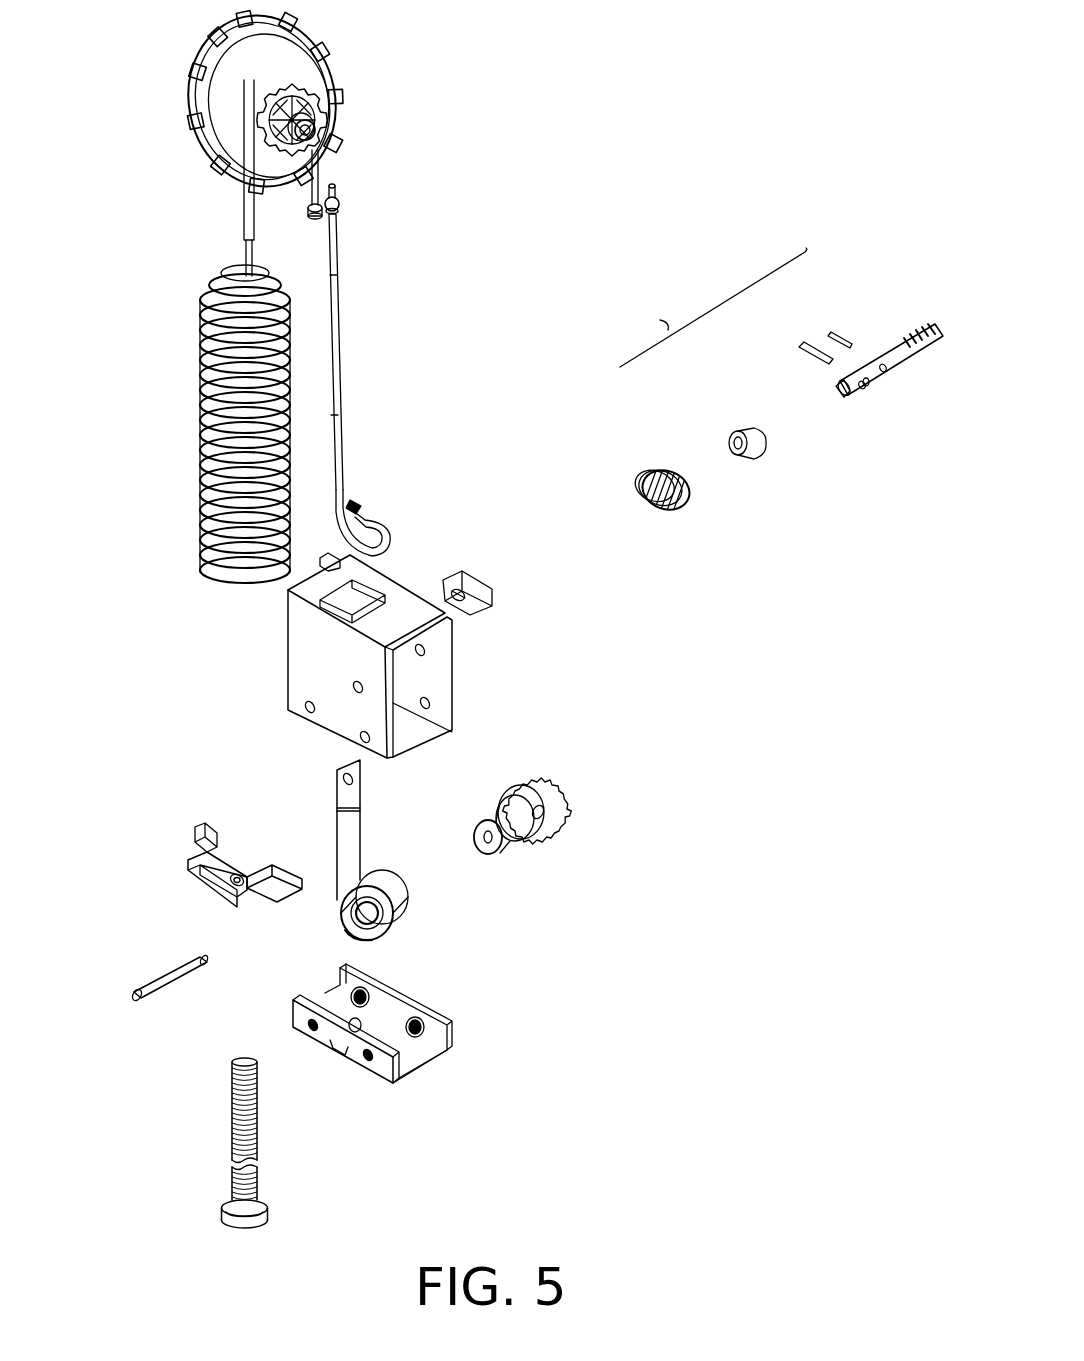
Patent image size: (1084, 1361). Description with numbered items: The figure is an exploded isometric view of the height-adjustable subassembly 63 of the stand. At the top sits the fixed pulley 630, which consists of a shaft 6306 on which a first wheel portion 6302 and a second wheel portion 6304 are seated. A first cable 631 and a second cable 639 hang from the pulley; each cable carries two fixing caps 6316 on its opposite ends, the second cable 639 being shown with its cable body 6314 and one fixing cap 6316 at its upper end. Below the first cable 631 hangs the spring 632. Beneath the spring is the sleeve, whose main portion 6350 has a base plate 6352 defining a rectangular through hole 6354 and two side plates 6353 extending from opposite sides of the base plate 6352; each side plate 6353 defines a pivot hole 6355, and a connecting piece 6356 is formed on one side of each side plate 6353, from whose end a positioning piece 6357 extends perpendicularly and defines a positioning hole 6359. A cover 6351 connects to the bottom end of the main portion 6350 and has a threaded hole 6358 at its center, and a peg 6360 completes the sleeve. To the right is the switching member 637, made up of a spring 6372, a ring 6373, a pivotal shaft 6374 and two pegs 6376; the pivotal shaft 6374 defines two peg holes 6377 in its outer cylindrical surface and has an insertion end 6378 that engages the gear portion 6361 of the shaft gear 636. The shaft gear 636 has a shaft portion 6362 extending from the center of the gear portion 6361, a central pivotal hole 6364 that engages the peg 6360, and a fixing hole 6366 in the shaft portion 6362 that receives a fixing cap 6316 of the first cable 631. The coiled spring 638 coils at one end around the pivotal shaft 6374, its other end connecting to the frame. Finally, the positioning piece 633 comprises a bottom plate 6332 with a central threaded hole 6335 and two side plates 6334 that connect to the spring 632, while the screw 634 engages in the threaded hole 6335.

The height-adjustable subassembly 63 is at (768, 66).
The fixed pulley 630 is at (198, 54).
The first wheel portion 6302 is at (214, 107).
The second wheel portion 6304 is at (318, 110).
The shaft 6306 is at (314, 132).
The first cable 631 is at (243, 241).
The spring 632 is at (204, 416).
The second cable 639 is at (354, 376).
The wire 6314 is at (339, 278).
The fixing cap 6316 is at (341, 203).
The main portion 6350 is at (470, 713).
The base plate 6352 is at (395, 596).
The side plate 6353 is at (310, 651).
The rectangular through hole 6354 is at (310, 597).
The pivot hole 6355 is at (427, 652).
The connecting piece 6356 is at (482, 613).
The positioning piece 6357 is at (480, 592).
The positioning hole 6359 is at (456, 584).
The switching member 637 is at (749, 386).
The spring 6372 is at (668, 470).
The ring 6373 is at (752, 434).
The pivotal shaft 6374 is at (886, 338).
The peg 6376 is at (796, 344).
The peg hole 6377 is at (867, 388).
The insertion end 6378 is at (850, 398).
The coiled spring 638 is at (332, 789).
The shaft gear 636 is at (494, 779).
The gear portion 6361 is at (566, 822).
The shaft portion 6362 is at (530, 841).
The pivotal hole 6364 is at (487, 834).
The fixing hole 6366 is at (560, 790).
The positioning piece 633 is at (184, 842).
The bottom plate 6332 is at (217, 890).
The side plate 6334 is at (277, 888).
The threaded hole 6335 is at (245, 882).
The peg 6360 is at (162, 982).
The cover 6351 is at (466, 1028).
The threaded hole 6358 is at (357, 1023).
The screw 634 is at (233, 1124).